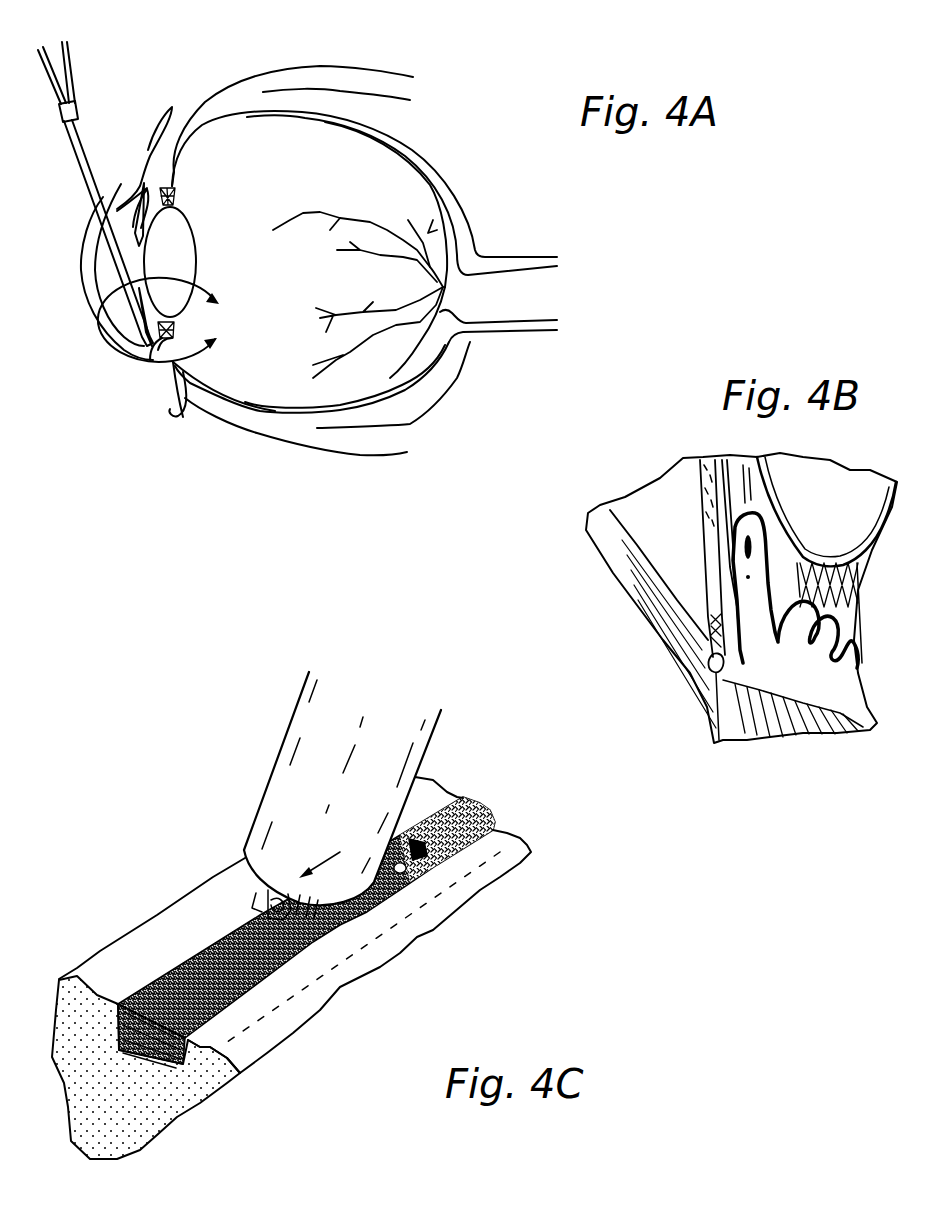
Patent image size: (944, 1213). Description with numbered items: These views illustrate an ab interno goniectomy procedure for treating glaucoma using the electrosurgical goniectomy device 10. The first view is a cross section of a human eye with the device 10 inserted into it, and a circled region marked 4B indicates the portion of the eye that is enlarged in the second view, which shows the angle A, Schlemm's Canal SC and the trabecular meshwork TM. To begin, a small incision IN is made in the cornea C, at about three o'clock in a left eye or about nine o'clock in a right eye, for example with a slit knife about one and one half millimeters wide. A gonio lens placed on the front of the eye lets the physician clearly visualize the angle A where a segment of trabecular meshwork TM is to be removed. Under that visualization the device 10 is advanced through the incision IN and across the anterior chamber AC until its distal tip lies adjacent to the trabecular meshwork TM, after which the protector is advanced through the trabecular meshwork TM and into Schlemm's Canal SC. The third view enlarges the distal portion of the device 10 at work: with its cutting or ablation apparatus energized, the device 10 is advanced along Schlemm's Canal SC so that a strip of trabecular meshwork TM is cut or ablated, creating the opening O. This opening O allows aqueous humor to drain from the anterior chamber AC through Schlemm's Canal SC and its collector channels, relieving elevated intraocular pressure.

In FIG. 4A, the electrosurgical goniectomy device 10 is at (84, 92).
In FIG. 4C, the electrosurgical goniectomy device 10 is at (265, 750).
In FIG. 4A, the incision IN is at (103, 200).
In FIG. 4A, the anterior chamber AC is at (103, 262).
In FIG. 4B, the anterior chamber AC is at (660, 500).
In FIG. 4A, the cornea C is at (87, 283).
In FIG. 4A, the angle A is at (150, 360).
In FIG. 4A, the detail region shown in Fig. 4B is at (178, 320).
In FIG. 4B, the trabecular meshwork TM is at (710, 630).
In FIG. 4C, the trabecular meshwork TM is at (478, 813).
In FIG. 4B, the Schlemm's Canal SC is at (713, 667).
In FIG. 4C, the Schlemm's Canal SC is at (173, 1068).
In FIG. 4C, the opening O is at (392, 875).